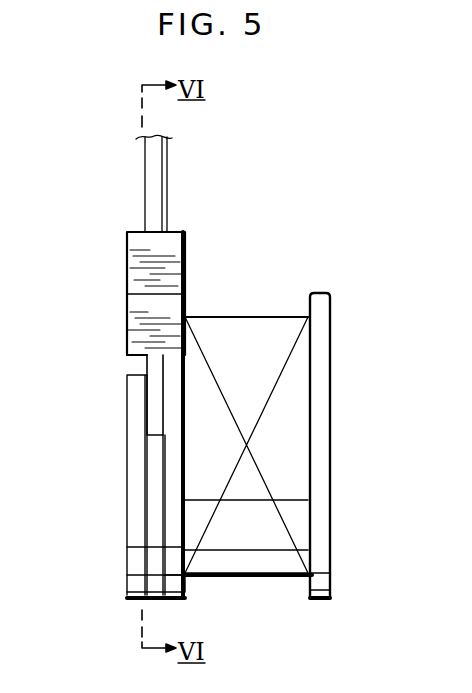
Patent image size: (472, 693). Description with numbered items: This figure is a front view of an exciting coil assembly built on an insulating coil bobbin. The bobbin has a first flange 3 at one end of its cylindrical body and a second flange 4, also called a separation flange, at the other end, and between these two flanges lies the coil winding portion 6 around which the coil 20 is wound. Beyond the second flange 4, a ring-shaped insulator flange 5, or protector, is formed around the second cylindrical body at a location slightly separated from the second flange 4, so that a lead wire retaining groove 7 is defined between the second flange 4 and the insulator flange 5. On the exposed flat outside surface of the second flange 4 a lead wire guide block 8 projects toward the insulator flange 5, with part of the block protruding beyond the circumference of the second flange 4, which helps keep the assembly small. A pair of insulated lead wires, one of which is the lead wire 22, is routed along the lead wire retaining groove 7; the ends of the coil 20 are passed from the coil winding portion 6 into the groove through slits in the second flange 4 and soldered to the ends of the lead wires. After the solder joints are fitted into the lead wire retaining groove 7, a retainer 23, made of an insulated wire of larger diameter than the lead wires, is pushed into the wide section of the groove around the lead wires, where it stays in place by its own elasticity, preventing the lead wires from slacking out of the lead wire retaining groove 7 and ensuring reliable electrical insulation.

The first flange 3 is at (320, 590).
The second flange 4 is at (190, 578).
The insulator flange 5 is at (138, 577).
The coil winding portion 6 is at (310, 302).
The lead wire retaining groove 7 is at (147, 414).
The lead wire guide block 8 is at (150, 326).
The coil 20 is at (247, 355).
The lead wire 22 is at (157, 190).
The retainer 23 is at (155, 533).